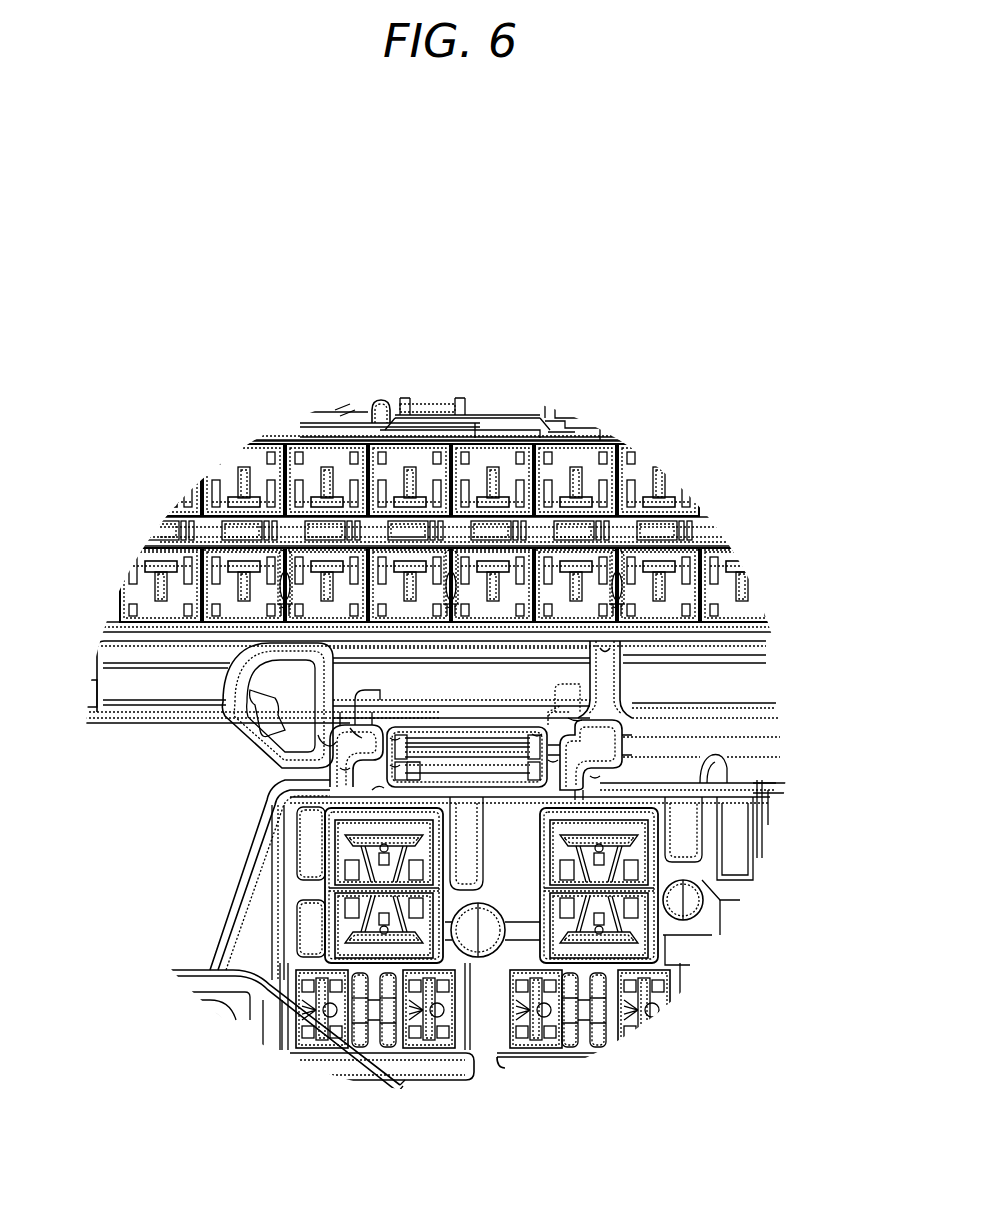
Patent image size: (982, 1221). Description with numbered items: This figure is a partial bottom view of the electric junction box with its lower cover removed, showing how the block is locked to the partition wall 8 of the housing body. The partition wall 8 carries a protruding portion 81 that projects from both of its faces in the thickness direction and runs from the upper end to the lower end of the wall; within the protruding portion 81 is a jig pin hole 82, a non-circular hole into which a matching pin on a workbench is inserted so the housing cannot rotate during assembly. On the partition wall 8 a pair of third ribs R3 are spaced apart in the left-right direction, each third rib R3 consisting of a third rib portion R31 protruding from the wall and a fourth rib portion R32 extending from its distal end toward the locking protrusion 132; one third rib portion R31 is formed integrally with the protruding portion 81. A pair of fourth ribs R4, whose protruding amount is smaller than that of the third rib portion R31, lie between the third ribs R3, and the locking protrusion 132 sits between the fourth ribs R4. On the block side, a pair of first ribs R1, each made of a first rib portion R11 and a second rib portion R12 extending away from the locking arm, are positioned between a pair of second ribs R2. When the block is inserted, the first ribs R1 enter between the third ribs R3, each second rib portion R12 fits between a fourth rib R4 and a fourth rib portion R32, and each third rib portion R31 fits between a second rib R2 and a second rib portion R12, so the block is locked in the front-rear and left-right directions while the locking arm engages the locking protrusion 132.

The partition wall 8 is at (167, 727).
The protruding portion 81 is at (258, 742).
The jig pin hole 82 is at (212, 713).
The locking protrusion 132 is at (445, 735).
The first rib R1 is at (395, 736).
The first rib portion R11 is at (553, 760).
The second rib portion R12 is at (357, 733).
The second rib R2 is at (343, 770).
The third rib R3 is at (607, 738).
The third rib portion R31 is at (320, 740).
The fourth rib portion R32 is at (378, 788).
The fourth rib R4 is at (398, 736).